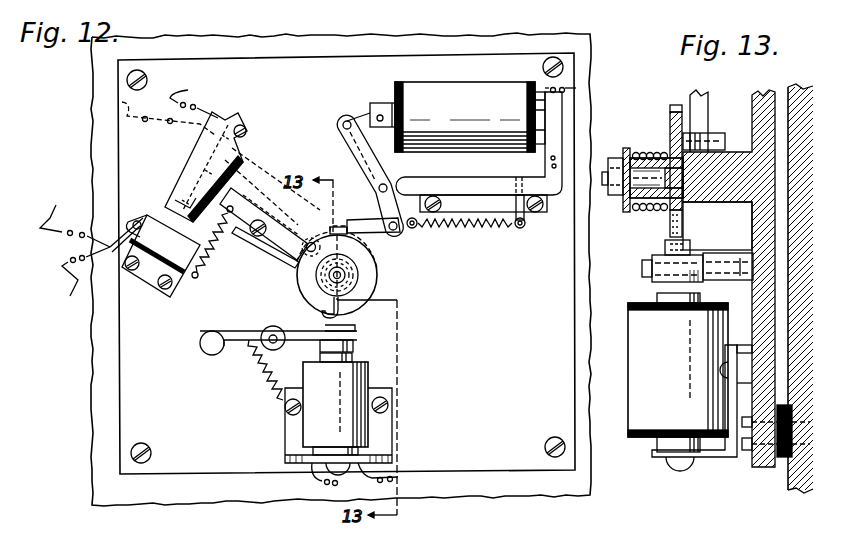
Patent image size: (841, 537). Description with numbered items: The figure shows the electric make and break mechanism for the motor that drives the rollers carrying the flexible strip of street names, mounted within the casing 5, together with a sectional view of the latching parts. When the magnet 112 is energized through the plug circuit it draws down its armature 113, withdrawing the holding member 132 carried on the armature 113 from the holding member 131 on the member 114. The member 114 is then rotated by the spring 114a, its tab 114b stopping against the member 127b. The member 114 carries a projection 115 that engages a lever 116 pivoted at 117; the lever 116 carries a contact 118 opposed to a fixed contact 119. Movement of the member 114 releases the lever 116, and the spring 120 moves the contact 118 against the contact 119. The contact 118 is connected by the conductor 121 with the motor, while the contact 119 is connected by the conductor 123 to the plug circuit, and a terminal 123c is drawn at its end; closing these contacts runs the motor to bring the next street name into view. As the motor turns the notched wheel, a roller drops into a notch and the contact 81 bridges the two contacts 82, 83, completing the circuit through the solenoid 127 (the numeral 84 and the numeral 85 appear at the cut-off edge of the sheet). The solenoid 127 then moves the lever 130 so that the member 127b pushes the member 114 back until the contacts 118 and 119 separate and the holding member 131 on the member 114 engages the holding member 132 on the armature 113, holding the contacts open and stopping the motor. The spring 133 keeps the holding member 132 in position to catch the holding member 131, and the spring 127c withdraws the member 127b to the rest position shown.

In FIG. 12, the casing 5 is at (95, 345).
In FIG. 13, the casing 5 is at (796, 475).
In FIG. 12, the magnet 112 is at (368, 374).
In FIG. 13, the magnet 112 is at (690, 382).
In FIG. 12, the armature 113 is at (300, 329).
In FIG. 13, the armature 113 is at (665, 260).
In FIG. 12, the member 114 is at (372, 291).
In FIG. 13, the member 114 is at (672, 122).
In FIG. 12, the spring 114a is at (350, 313).
In FIG. 13, the spring 114a is at (650, 152).
In FIG. 12, the member 114b is at (338, 226).
In FIG. 13, the member 114b is at (676, 105).
In FIG. 12, the projection 115 is at (311, 242).
In FIG. 13, the projection 115 is at (713, 134).
In FIG. 12, the lever 116 is at (290, 258).
In FIG. 13, the lever 116 is at (706, 94).
In FIG. 12, the pivot 117 is at (266, 216).
In FIG. 12, the contact 118 is at (206, 168).
In FIG. 12, the contact 119 is at (157, 217).
In FIG. 12, the spring 120 is at (222, 262).
In FIG. 12, the conductor 121 is at (122, 102).
In FIG. 12, the conductor 123 is at (75, 219).
In FIG. 12, the lead wire terminal 123c is at (77, 280).
In FIG. 12, the solenoid 127 is at (442, 85).
In FIG. 12, the member 127b is at (378, 232).
In FIG. 12, the spring 127c is at (482, 228).
In FIG. 12, the lever 130 is at (350, 152).
In FIG. 12, the holding member 131 is at (355, 323).
In FIG. 13, the holding member 131 is at (666, 246).
In FIG. 12, the holding member 132 is at (325, 334).
In FIG. 13, the holding member 132 is at (692, 252).
In FIG. 12, the spring 133 is at (263, 373).
In FIG. 12, the contact 81 is at (400, 530).
In FIG. 12, the contact 82 is at (430, 530).
In FIG. 12, the contact 83 is at (363, 531).
In FIG. 12, the element 84 (cut off) 84 is at (460, 527).
In FIG. 12, the element 85 (cut off) 85 is at (318, 530).